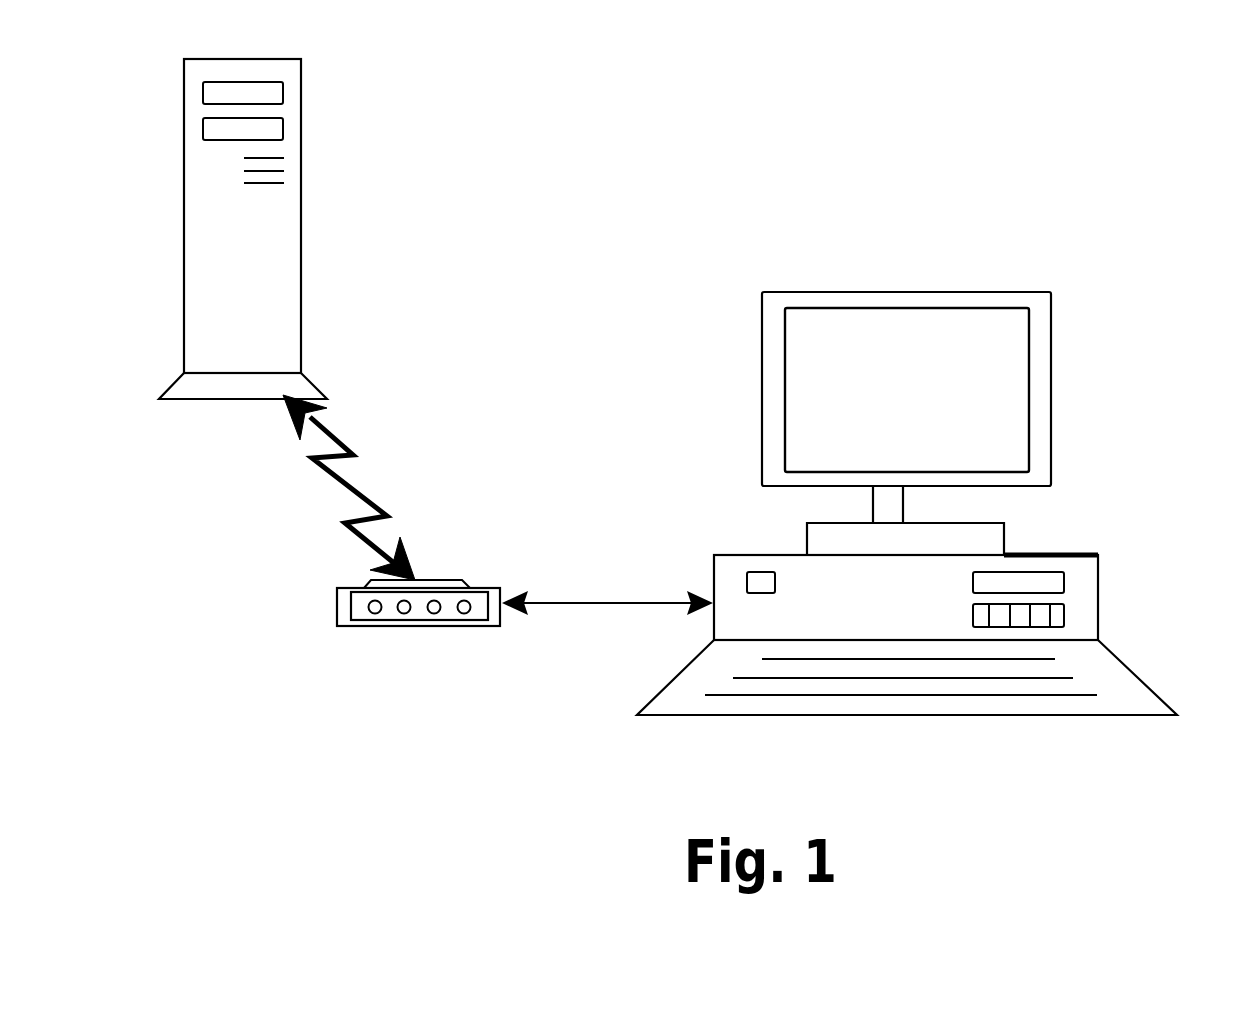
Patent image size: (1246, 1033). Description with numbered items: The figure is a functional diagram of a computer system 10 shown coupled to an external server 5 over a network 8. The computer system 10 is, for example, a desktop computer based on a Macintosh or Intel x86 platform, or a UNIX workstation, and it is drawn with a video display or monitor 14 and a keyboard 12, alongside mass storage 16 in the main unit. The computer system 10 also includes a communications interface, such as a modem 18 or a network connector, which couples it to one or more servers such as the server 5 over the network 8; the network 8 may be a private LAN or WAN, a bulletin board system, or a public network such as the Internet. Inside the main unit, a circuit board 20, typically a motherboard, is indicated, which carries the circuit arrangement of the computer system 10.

The server 5 is at (184, 242).
The network 8 is at (365, 490).
The computer system 10 is at (941, 451).
The keyboard 12 is at (1103, 682).
The monitor 14 is at (933, 323).
The mass storage 16 is at (1052, 583).
The modem 18 is at (368, 625).
The circuit board 20 is at (812, 592).